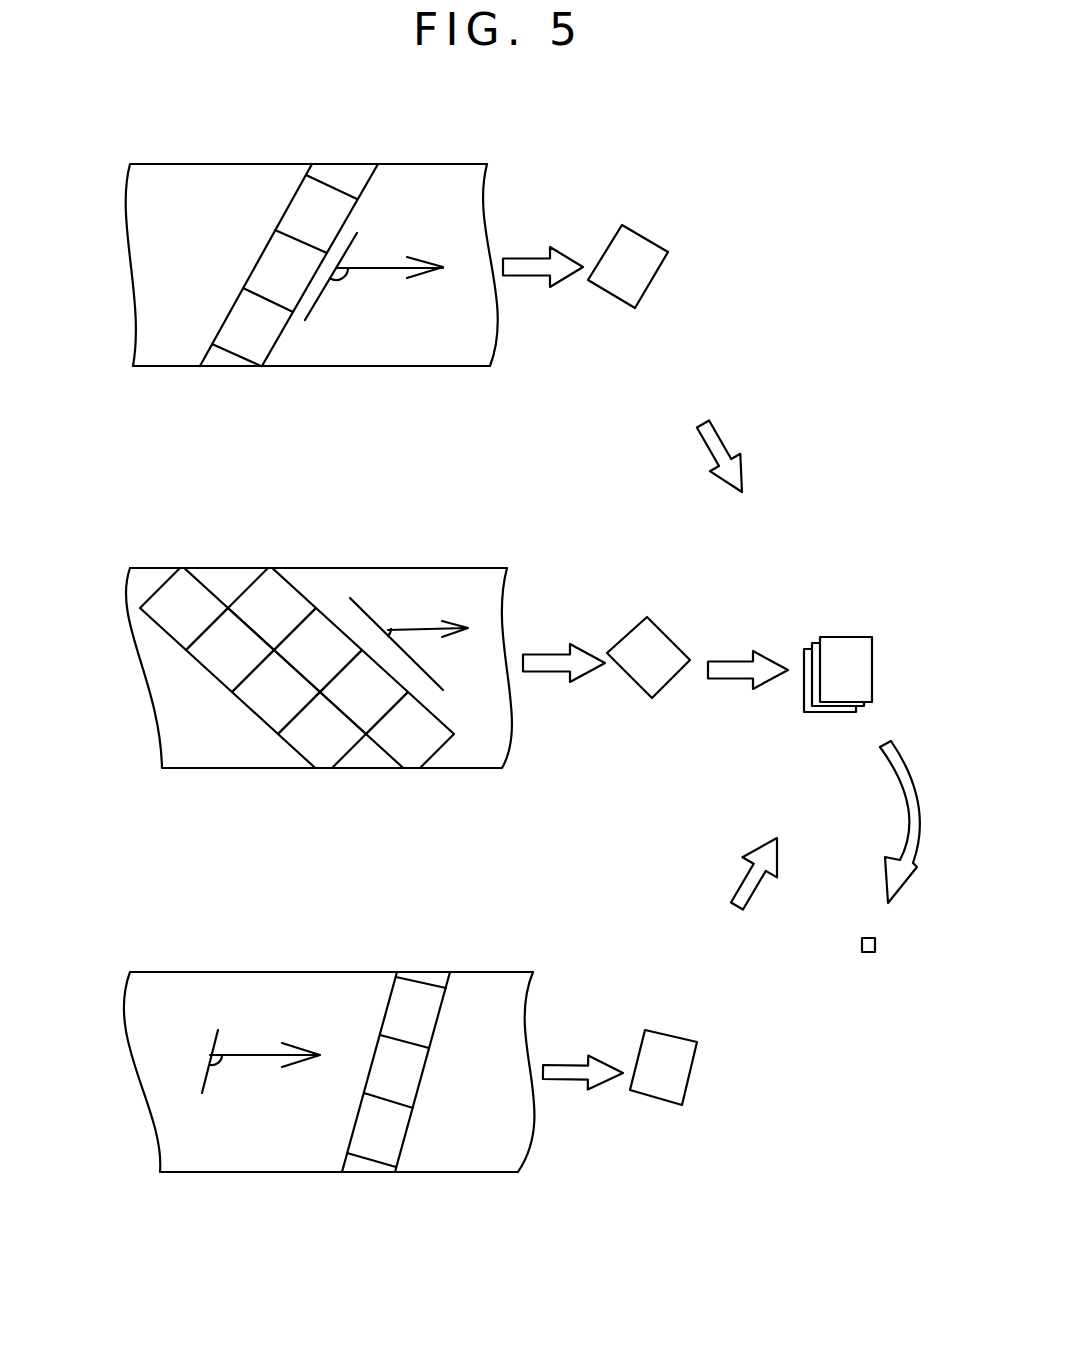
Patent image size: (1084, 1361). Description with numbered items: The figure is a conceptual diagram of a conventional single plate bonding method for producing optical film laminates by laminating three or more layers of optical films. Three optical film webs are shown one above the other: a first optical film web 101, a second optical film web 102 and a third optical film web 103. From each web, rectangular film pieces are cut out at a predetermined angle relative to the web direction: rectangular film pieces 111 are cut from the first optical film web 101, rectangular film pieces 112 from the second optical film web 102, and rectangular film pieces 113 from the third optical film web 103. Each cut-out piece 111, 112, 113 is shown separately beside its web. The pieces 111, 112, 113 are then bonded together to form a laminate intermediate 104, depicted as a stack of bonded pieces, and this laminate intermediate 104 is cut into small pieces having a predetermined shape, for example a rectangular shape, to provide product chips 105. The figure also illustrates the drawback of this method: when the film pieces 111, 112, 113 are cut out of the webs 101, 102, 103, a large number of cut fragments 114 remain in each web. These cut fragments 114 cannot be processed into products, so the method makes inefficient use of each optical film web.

The first optical film web 101 is at (403, 352).
The second optical film web 102 is at (482, 750).
The third optical film web 103 is at (200, 1147).
The laminate intermediate 104 is at (856, 625).
The product chip 105 is at (880, 970).
The rectangular film piece 111 is at (300, 215).
The rectangular film piece 112 is at (323, 633).
The rectangular film piece 113 is at (420, 1023).
The cut fragment 114 is at (330, 183).